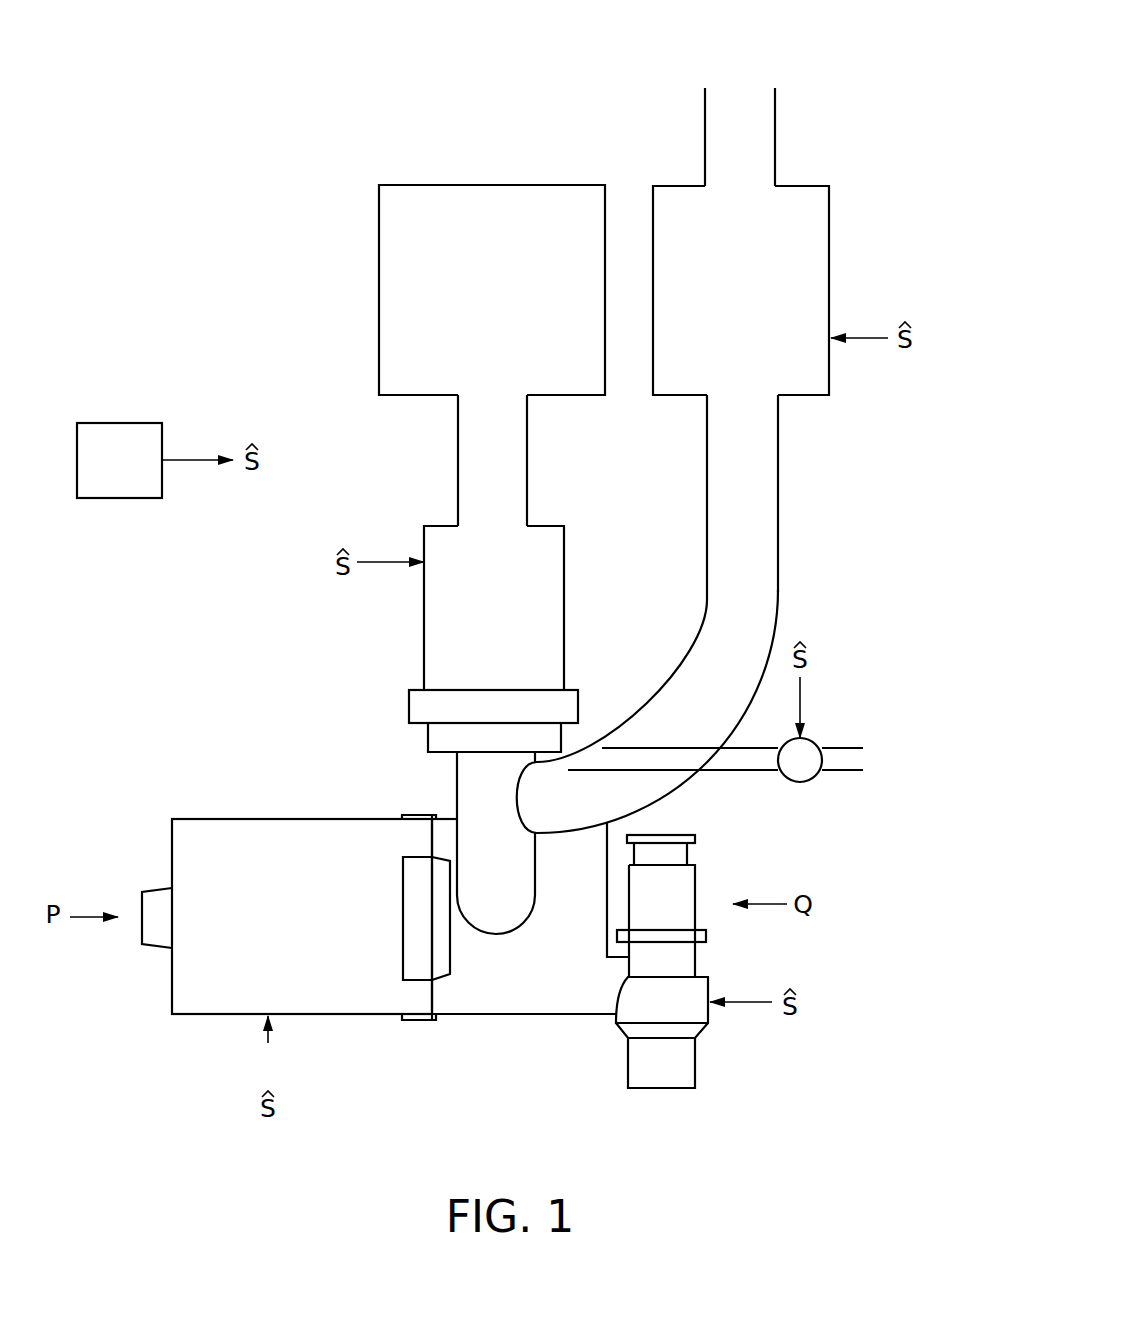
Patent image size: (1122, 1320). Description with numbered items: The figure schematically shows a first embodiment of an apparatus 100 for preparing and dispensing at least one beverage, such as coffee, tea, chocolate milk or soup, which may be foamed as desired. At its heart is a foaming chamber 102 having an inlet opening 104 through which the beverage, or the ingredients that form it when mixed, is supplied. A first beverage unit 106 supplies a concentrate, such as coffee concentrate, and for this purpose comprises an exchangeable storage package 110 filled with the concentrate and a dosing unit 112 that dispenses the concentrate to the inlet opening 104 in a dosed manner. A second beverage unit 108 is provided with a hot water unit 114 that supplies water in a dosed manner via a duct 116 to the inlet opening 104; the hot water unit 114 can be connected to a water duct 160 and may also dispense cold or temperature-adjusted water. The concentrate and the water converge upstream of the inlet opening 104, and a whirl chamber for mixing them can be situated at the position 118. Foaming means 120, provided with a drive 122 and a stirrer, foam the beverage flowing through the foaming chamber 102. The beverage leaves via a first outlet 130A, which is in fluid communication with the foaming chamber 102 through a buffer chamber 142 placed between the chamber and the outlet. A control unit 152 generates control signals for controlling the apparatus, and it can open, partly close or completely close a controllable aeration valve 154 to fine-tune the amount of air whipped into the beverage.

The apparatus for preparing and dispensing a beverage 100 is at (750, 1143).
The foaming chamber 102 is at (497, 958).
The inlet opening 104 is at (493, 877).
The first beverage unit 106 is at (575, 501).
The second beverage unit 108 is at (809, 494).
The exchangeable storage package 110 is at (462, 306).
The dosing unit 112 is at (462, 628).
The hot water unit 114 is at (712, 306).
The duct 116 is at (779, 597).
The position of whirl chamber 118 is at (492, 781).
The foaming means 120 is at (367, 994).
The drive 122 is at (215, 848).
The first outlet 130A is at (667, 1057).
The buffer chamber 142 is at (678, 995).
The control unit 152 is at (95, 474).
The controllable aeration valve 154 is at (800, 770).
The water duct 160 is at (739, 100).